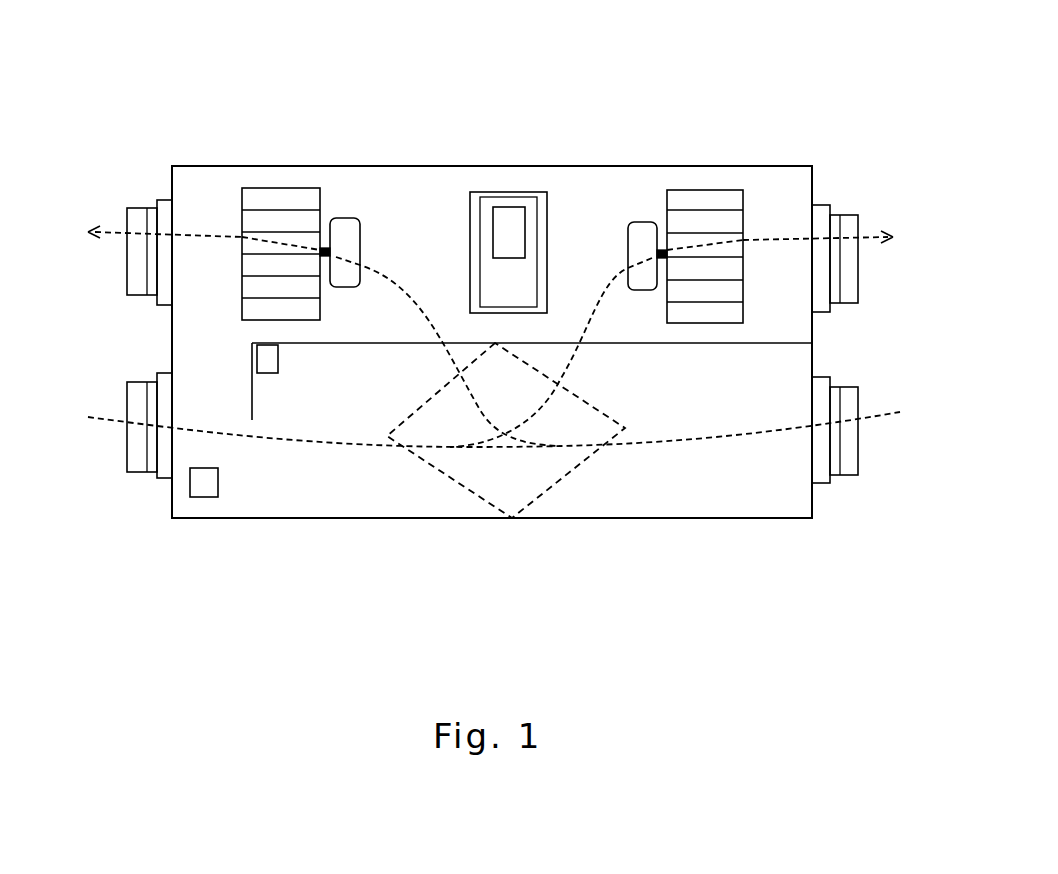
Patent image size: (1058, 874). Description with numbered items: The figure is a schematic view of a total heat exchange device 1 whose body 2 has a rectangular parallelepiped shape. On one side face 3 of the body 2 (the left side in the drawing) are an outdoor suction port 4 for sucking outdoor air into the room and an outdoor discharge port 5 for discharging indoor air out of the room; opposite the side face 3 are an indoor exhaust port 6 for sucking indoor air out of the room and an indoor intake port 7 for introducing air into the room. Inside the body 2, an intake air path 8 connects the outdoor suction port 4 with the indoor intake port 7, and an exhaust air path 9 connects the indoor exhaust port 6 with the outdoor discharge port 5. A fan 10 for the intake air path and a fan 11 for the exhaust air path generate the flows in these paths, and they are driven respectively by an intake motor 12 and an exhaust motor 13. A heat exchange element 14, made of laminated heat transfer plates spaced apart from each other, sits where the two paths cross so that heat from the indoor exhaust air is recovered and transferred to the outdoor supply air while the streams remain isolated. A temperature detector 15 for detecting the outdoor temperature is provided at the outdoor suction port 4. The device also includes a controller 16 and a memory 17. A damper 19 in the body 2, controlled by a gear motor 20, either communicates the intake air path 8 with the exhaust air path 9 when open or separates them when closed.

The total heat exchange device 1 is at (820, 147).
The body 2 is at (705, 518).
The side face 3 is at (172, 200).
The outdoor suction port 4 is at (135, 410).
The outdoor discharge port 5 is at (110, 215).
The indoor exhaust port 6 is at (848, 442).
The indoor intake port 7 is at (848, 257).
The intake air path 8 is at (870, 215).
The exhaust air path 9 is at (870, 413).
The fan for intake air path 10 is at (705, 210).
The fan for exhaust air path 11 is at (280, 200).
The intake motor 12 is at (655, 215).
The exhaust motor 13 is at (365, 215).
The heat exchange element 14 is at (527, 483).
The temperature detector 15 is at (205, 488).
The controller 16 is at (508, 212).
The memory 17 is at (498, 225).
The damper 19 is at (250, 380).
The gear motor 20 is at (277, 373).